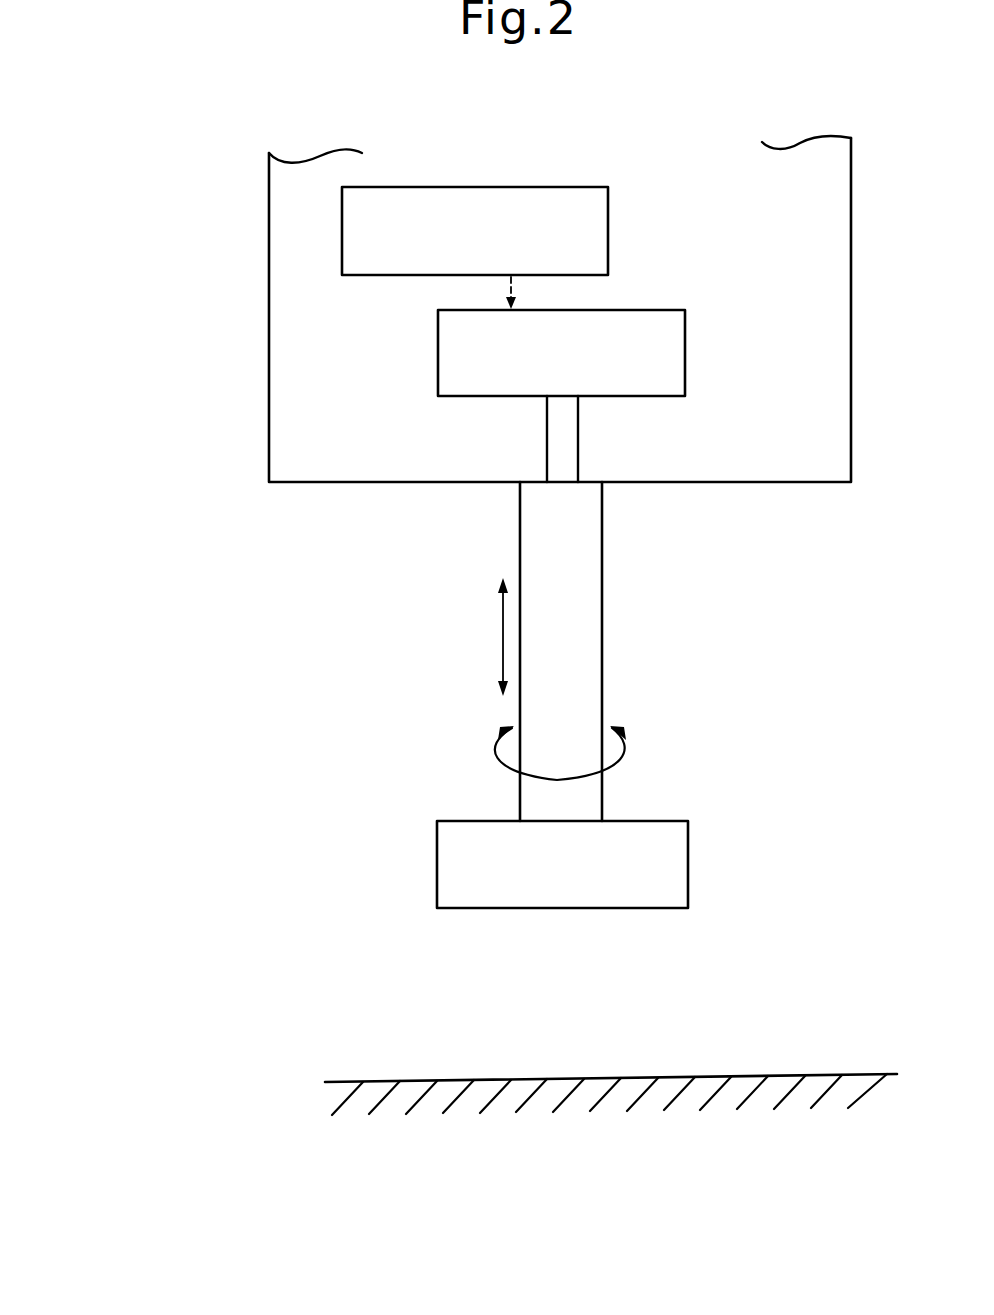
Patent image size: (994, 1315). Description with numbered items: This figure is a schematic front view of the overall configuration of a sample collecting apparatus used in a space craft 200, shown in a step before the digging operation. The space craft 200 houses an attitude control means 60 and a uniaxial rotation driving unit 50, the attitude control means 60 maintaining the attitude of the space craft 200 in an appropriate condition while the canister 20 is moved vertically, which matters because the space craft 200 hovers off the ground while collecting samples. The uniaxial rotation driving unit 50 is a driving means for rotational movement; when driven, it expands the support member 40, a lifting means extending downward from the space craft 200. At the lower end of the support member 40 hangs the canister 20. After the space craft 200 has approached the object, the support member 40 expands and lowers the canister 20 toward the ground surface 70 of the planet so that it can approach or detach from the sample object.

The space craft 200 is at (269, 322).
The attitude control means 60 is at (563, 187).
The uniaxial rotation driving unit 50 is at (685, 360).
The support member 40 is at (602, 578).
The canister 20 is at (676, 868).
The ground surface 70 is at (866, 1074).